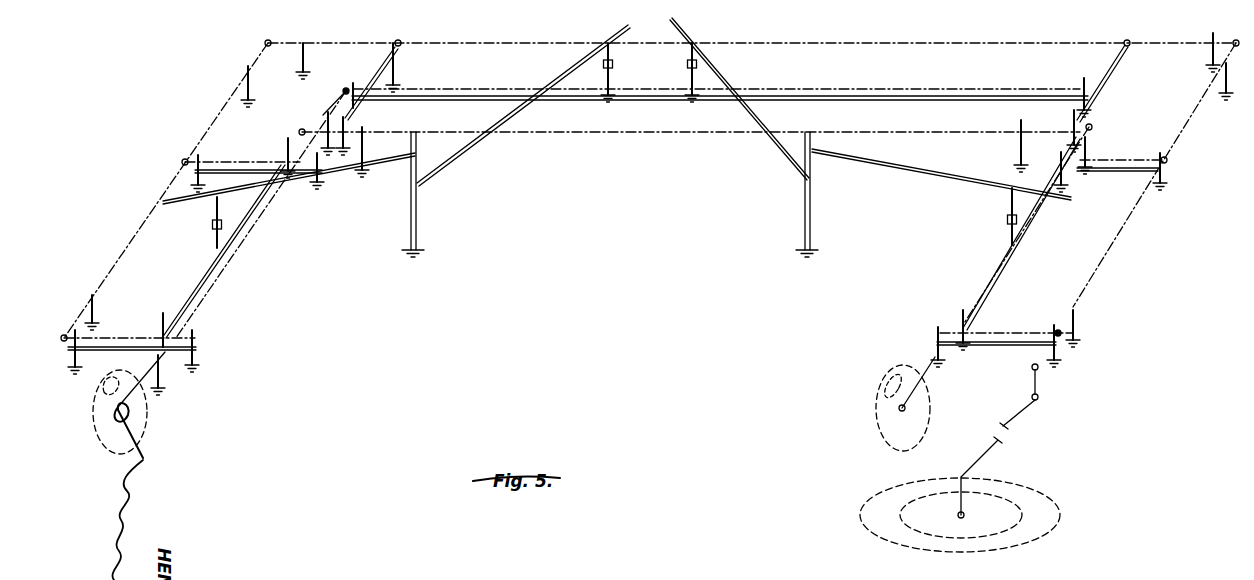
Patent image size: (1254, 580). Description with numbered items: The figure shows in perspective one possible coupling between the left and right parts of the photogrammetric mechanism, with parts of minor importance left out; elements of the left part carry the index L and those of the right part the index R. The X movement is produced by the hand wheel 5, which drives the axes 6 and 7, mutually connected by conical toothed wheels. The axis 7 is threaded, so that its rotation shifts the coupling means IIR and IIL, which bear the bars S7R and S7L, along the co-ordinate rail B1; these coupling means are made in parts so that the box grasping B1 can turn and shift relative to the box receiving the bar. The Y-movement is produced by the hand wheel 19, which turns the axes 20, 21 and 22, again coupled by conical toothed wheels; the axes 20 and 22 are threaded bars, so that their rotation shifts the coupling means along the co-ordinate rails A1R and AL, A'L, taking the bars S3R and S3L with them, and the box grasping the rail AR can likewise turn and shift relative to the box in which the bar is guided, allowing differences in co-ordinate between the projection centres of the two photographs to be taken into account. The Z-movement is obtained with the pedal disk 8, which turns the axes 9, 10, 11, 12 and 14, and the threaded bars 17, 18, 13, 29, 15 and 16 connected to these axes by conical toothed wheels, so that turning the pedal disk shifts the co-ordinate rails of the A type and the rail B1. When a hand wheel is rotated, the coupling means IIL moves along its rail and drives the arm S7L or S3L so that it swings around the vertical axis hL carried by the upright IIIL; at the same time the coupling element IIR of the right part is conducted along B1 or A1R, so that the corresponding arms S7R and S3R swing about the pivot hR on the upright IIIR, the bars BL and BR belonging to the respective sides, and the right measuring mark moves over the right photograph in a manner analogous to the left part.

The hand wheel 5 is at (148, 429).
The axis 6 is at (210, 284).
The axis 7 is at (441, 89).
The pedal disk 8 is at (1050, 508).
The axis 9 is at (1020, 420).
The axis 10 is at (1040, 385).
The axis 11 is at (1100, 267).
The axis 12 is at (988, 42).
The threaded bar 13 is at (1108, 74).
The axis 14 is at (213, 123).
The threaded bar 15 is at (243, 166).
The threaded bar 16 is at (136, 340).
The threaded bar 17 is at (1010, 334).
The threaded bar 18 is at (1125, 161).
The hand wheel 19 is at (880, 431).
The axis 20 is at (982, 286).
The axis 21 is at (925, 131).
The axis 22 is at (257, 212).
The threaded bar 29 is at (382, 74).
The co-ordinate rail AL is at (289, 180).
The co-ordinate rail A'L is at (217, 251).
The co-ordinate rail AR is at (1014, 183).
The co-ordinate rail A1R is at (985, 301).
The co-ordinate rail B1 is at (558, 101).
The bar BL is at (606, 42).
The bar BR is at (694, 41).
The bar S3L is at (348, 173).
The bar S3R is at (904, 167).
The bar S7L is at (472, 145).
The bar S7R is at (768, 147).
The coupling means IIL is at (215, 214).
The coupling means IIR is at (694, 78).
The pivot support IIIL is at (418, 213).
The pivot support IIIR is at (811, 215).
The vertical axis hL is at (420, 179).
The pivot hR is at (809, 179).